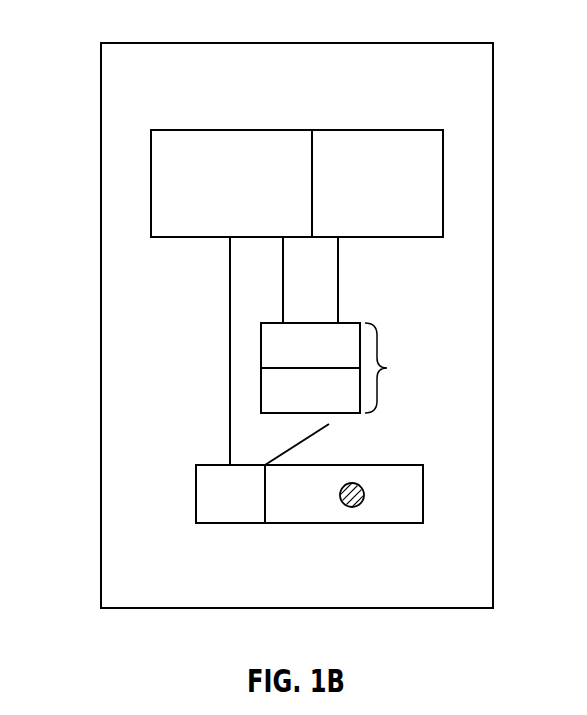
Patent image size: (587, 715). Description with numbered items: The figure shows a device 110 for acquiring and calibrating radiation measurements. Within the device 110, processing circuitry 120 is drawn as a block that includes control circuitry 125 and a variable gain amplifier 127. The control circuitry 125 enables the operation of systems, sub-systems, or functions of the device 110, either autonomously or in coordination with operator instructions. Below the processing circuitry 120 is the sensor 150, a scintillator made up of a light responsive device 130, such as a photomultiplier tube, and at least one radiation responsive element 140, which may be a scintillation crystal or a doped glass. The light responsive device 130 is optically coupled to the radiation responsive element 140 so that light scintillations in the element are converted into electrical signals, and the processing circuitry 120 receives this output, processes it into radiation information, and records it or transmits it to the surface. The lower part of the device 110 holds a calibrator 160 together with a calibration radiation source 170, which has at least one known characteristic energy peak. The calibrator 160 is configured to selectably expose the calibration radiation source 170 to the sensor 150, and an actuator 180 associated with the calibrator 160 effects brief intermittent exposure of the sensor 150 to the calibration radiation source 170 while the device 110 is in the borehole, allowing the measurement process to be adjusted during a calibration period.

The device 110 is at (433, 43).
The processing circuitry 120 is at (207, 130).
The control circuitry 125 is at (151, 183).
The variable gain amplifier 127 is at (443, 183).
The light responsive device 130 is at (347, 323).
The radiation responsive element 140 is at (312, 413).
The sensor 150 is at (399, 368).
The calibrator 160 is at (310, 523).
The calibration radiation source 170 is at (347, 507).
The actuator 180 is at (198, 237).